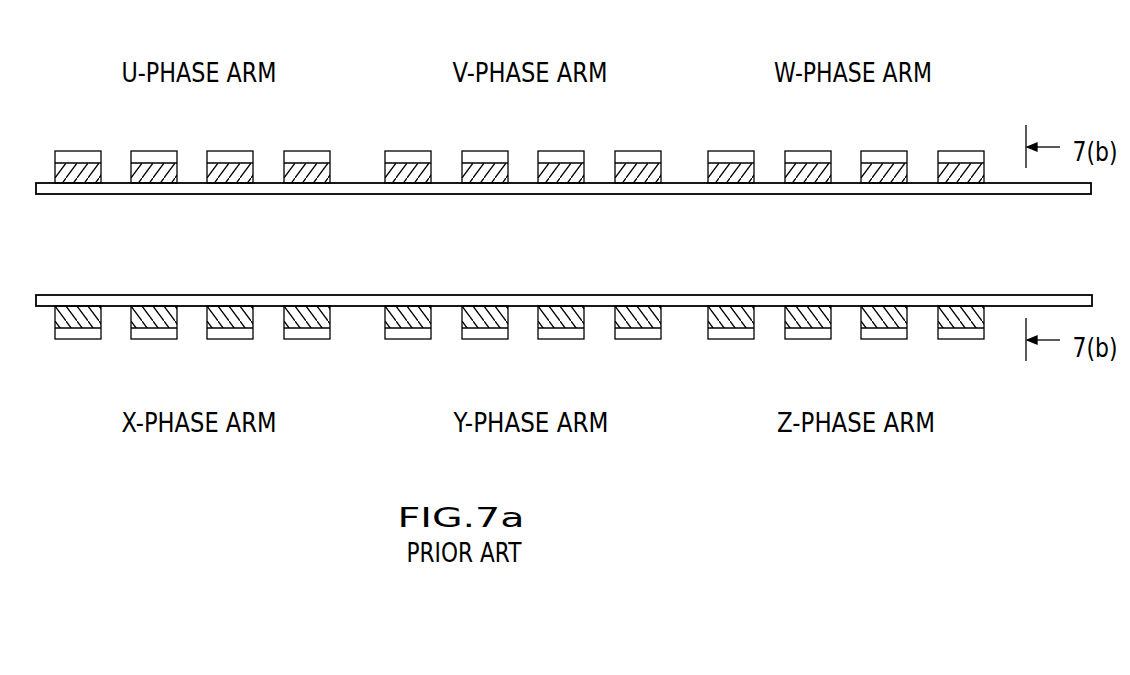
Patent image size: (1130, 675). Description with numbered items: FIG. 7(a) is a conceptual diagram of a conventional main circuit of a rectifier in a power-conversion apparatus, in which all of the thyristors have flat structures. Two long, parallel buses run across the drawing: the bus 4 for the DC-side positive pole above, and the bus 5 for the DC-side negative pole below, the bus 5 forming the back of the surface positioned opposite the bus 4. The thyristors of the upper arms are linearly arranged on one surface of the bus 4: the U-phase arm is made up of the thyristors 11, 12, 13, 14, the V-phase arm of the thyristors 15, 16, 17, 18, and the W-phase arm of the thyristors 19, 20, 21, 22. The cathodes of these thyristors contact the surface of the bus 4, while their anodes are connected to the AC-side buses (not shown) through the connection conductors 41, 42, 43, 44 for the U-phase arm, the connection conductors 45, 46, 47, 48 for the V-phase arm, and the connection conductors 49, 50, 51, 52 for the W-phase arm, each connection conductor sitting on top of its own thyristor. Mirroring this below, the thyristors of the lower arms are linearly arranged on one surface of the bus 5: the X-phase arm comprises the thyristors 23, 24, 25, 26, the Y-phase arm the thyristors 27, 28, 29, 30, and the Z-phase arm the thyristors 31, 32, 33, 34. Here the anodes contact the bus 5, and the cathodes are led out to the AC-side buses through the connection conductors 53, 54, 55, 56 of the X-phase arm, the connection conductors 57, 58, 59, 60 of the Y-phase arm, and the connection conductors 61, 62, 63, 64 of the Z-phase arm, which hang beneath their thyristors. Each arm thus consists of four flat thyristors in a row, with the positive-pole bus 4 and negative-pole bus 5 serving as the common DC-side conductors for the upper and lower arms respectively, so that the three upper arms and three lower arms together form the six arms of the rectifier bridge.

The bus for the DC-side positive pole 4 is at (1057, 195).
The bus for the DC-side negative pole 5 is at (1052, 294).
The Thyristor 11 is at (77, 178).
The Thyristor 12 is at (153, 178).
The Thyristor 13 is at (229, 178).
The Thyristor 14 is at (306, 178).
The Thyristor 15 is at (407, 178).
The Thyristor 16 is at (484, 178).
The Thyristor 17 is at (560, 178).
The Thyristor 18 is at (637, 178).
The Thyristor 19 is at (730, 178).
The Thyristor 20 is at (807, 178).
The Thyristor 21 is at (883, 178).
The Thyristor 22 is at (960, 178).
The Thyristor 23 is at (79, 313).
The Thyristor 24 is at (155, 313).
The Thyristor 25 is at (231, 313).
The Thyristor 26 is at (308, 313).
The Thyristor 27 is at (409, 313).
The Thyristor 28 is at (486, 313).
The Thyristor 29 is at (562, 313).
The Thyristor 30 is at (639, 313).
The Thyristor 31 is at (732, 313).
The Thyristor 32 is at (809, 313).
The Thyristor 33 is at (885, 313).
The Thyristor 34 is at (962, 313).
The connection conductor 41 is at (78, 150).
The connection conductor 42 is at (154, 150).
The connection conductor 43 is at (230, 150).
The connection conductor 44 is at (307, 150).
The connection conductor 45 is at (408, 150).
The connection conductor 46 is at (485, 150).
The connection conductor 47 is at (561, 150).
The connection conductor 48 is at (638, 150).
The connection conductor 49 is at (731, 150).
The connection conductor 50 is at (808, 150).
The connection conductor 51 is at (884, 150).
The connection conductor 52 is at (961, 150).
The connection conductor 53 is at (78, 342).
The connection conductor 54 is at (154, 342).
The connection conductor 55 is at (230, 342).
The connection conductor 56 is at (307, 342).
The connection conductor 57 is at (408, 342).
The connection conductor 58 is at (485, 342).
The connection conductor 59 is at (561, 342).
The connection conductor 60 is at (638, 342).
The connection conductor 61 is at (731, 342).
The connection conductor 62 is at (808, 342).
The connection conductor 63 is at (884, 342).
The connection conductor 64 is at (961, 342).